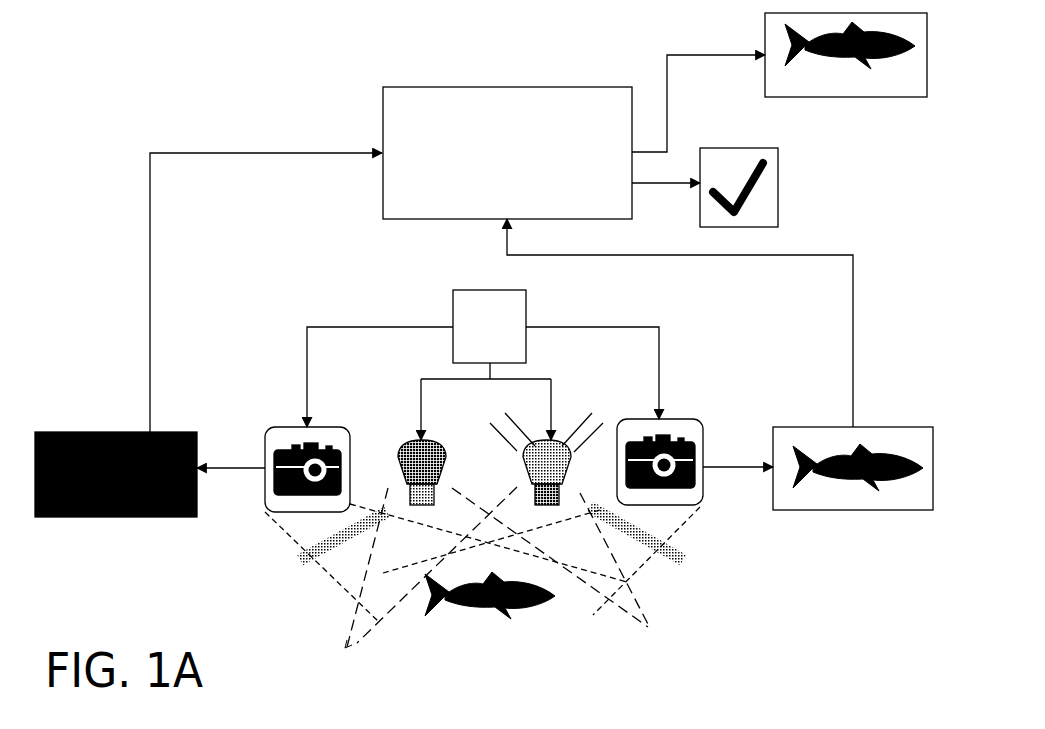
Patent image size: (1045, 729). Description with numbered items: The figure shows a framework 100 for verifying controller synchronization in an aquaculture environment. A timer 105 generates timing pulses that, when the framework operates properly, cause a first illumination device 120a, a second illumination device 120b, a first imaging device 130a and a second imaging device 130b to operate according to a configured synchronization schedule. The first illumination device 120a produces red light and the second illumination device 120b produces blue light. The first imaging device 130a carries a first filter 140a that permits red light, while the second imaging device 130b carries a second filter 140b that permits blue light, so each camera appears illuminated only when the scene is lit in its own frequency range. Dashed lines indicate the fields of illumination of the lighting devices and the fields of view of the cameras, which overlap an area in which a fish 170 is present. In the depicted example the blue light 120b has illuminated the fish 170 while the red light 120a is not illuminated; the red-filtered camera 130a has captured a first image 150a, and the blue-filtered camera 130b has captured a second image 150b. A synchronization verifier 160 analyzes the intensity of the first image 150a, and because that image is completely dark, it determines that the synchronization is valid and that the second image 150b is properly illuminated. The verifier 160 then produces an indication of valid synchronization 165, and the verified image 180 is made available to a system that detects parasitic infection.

The system 100 is at (90, 77).
The timer 105 is at (453, 308).
The first illumination device 120a is at (412, 430).
The second illumination device 120b is at (568, 423).
The first imaging device 130a is at (262, 447).
The second imaging device 130b is at (706, 443).
The first filter 140a is at (297, 566).
The second filter 140b is at (678, 572).
The first image 150a is at (127, 515).
The second image 150b is at (862, 510).
The synchronization verifier 160 is at (507, 153).
The indication of valid synchronization 165 is at (780, 188).
The fish 170 is at (488, 633).
The verified image 180 is at (860, 97).